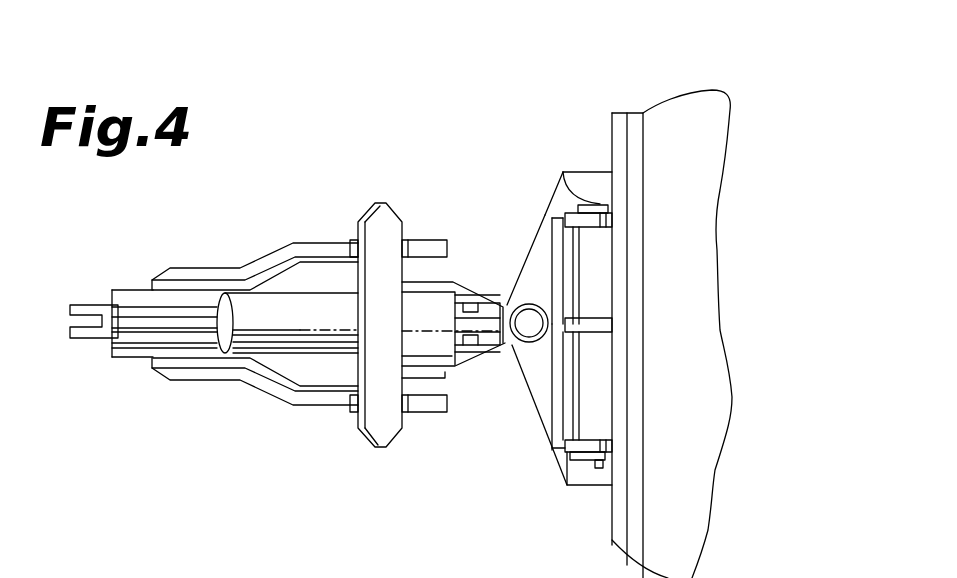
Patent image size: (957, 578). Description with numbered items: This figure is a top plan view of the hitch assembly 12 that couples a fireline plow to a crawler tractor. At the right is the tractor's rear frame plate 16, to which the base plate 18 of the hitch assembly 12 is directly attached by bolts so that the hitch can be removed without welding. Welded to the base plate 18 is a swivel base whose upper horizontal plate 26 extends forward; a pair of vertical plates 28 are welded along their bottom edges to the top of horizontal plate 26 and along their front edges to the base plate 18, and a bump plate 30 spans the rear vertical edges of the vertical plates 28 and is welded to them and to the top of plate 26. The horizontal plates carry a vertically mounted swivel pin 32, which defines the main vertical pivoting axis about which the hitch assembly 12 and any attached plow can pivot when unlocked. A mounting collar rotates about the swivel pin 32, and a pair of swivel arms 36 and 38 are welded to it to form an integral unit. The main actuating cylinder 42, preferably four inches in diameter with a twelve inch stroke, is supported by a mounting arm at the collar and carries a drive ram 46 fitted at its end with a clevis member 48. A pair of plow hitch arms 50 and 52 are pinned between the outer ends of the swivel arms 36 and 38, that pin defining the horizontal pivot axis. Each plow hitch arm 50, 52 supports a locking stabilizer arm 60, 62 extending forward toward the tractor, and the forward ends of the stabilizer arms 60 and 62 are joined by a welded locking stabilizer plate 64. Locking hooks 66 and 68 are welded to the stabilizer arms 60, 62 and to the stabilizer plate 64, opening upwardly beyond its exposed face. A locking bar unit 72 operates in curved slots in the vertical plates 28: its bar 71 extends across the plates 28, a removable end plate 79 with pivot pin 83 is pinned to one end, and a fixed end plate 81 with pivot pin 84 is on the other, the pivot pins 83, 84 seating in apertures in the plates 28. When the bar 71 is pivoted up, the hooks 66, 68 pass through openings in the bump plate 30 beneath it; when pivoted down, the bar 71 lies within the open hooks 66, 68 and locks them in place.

The hitch assembly 12 is at (252, 196).
The rear frame plate 16 is at (632, 142).
The base plate 18 is at (620, 338).
The upper horizontal plate 26 is at (590, 178).
The vertical plates 28 is at (612, 222).
The bump plate 30 is at (556, 437).
The swivel pin 32 is at (526, 334).
The swivel arm 36 is at (455, 366).
The swivel arm 38 is at (500, 282).
The main actuating cylinder 42 is at (290, 316).
The drive ram 46 is at (127, 318).
The clevis member 48 is at (73, 312).
The plow hitch arm 50 is at (133, 352).
The plow hitch arm 52 is at (145, 297).
The locking stabilizer arm 60 is at (217, 373).
The locking stabilizer arm 62 is at (320, 240).
The locking stabilizer plate 64 is at (394, 321).
The locking hook 66 is at (425, 412).
The locking hook 68 is at (420, 240).
The bar 71 is at (573, 402).
The locking bar unit 72 is at (560, 250).
The end plate 79 is at (572, 457).
The end plate 81 is at (560, 200).
The pivot pin 83 is at (598, 470).
The pivot pin 84 is at (563, 176).